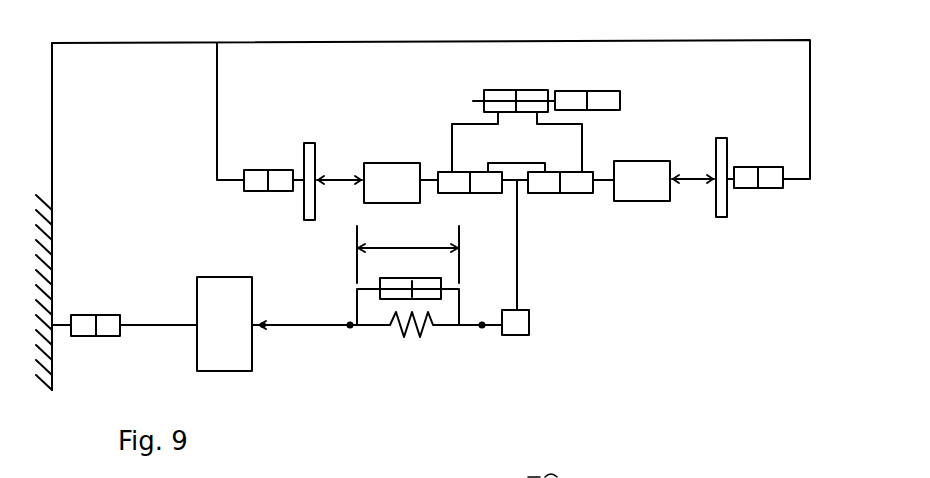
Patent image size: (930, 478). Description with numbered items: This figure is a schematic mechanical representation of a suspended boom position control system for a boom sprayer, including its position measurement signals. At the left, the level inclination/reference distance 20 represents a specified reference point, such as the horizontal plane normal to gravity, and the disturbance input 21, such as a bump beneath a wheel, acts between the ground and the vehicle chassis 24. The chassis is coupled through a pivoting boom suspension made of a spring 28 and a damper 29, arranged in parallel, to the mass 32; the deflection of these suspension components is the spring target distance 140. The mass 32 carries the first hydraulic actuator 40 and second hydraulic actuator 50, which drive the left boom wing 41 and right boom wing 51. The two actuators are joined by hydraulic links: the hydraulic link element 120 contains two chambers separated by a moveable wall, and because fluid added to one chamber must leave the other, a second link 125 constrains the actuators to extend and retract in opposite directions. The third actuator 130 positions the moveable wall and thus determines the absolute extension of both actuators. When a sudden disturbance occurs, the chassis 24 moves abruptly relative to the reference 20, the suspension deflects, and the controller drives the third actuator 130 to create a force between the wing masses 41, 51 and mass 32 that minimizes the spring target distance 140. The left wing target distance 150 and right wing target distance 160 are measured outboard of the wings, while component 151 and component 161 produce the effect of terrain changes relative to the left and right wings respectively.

The level inclination/reference distance 20 is at (52, 248).
The disturbance input 21 is at (98, 315).
The vehicle chassis 24 is at (224, 324).
The spring 28 is at (422, 334).
The damper 29 is at (400, 277).
The mass 32 is at (520, 324).
The first hydraulic actuator 40 is at (478, 196).
The left boom wing 41 is at (392, 183).
The second hydraulic actuator 50 is at (567, 196).
The right boom wing 51 is at (642, 181).
The hydraulic link element 120 is at (532, 90).
The second hydraulic link 125 is at (512, 162).
The third actuator 130 is at (622, 100).
The spring target distance 140 is at (402, 240).
The left wing target distance 150 is at (334, 177).
The left target change input component 151 is at (278, 195).
The right wing target distance 160 is at (692, 182).
The right target change input component 161 is at (750, 195).